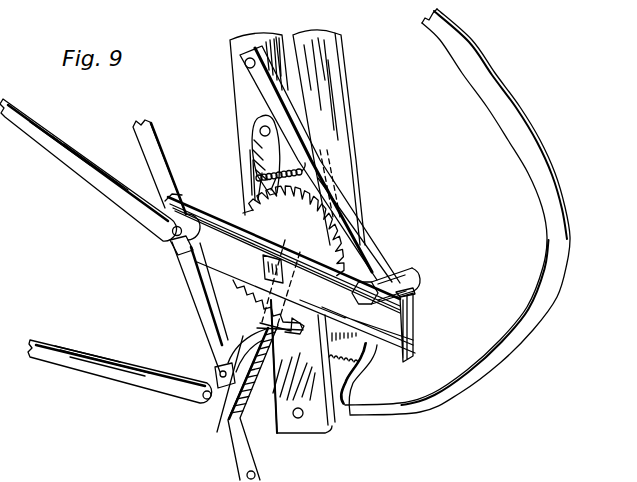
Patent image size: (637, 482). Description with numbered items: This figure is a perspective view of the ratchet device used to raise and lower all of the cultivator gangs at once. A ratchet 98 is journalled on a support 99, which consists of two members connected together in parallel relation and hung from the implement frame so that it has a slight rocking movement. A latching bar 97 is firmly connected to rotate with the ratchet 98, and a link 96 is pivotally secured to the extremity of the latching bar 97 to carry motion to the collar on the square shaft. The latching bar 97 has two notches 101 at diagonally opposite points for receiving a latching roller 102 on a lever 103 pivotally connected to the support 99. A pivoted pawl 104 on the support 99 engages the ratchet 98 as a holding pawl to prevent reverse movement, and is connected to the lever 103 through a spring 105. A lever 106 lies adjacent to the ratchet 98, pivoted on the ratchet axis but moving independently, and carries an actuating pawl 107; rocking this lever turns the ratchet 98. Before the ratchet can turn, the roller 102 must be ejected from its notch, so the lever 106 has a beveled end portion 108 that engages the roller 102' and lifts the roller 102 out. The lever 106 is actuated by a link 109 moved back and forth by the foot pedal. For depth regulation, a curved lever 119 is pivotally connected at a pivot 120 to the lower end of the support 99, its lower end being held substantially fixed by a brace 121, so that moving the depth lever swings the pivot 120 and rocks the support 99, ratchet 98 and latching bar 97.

The link 96 is at (78, 157).
The latching bar 97 is at (228, 220).
The ratchet 98 is at (243, 212).
The support 99 is at (237, 50).
The notches 101 is at (195, 258).
The latching roller 102 is at (431, 331).
The roller 102' is at (407, 277).
The lever 103 is at (377, 228).
The pawl 104 is at (257, 147).
The spring 105 is at (295, 165).
The lever 106 is at (243, 327).
The actuating pawl 107 is at (233, 410).
The beveled end portion 108 is at (338, 200).
The link 109 is at (147, 382).
The curved lever 119 is at (543, 283).
The pivot 120 is at (301, 416).
The brace 121 is at (202, 315).